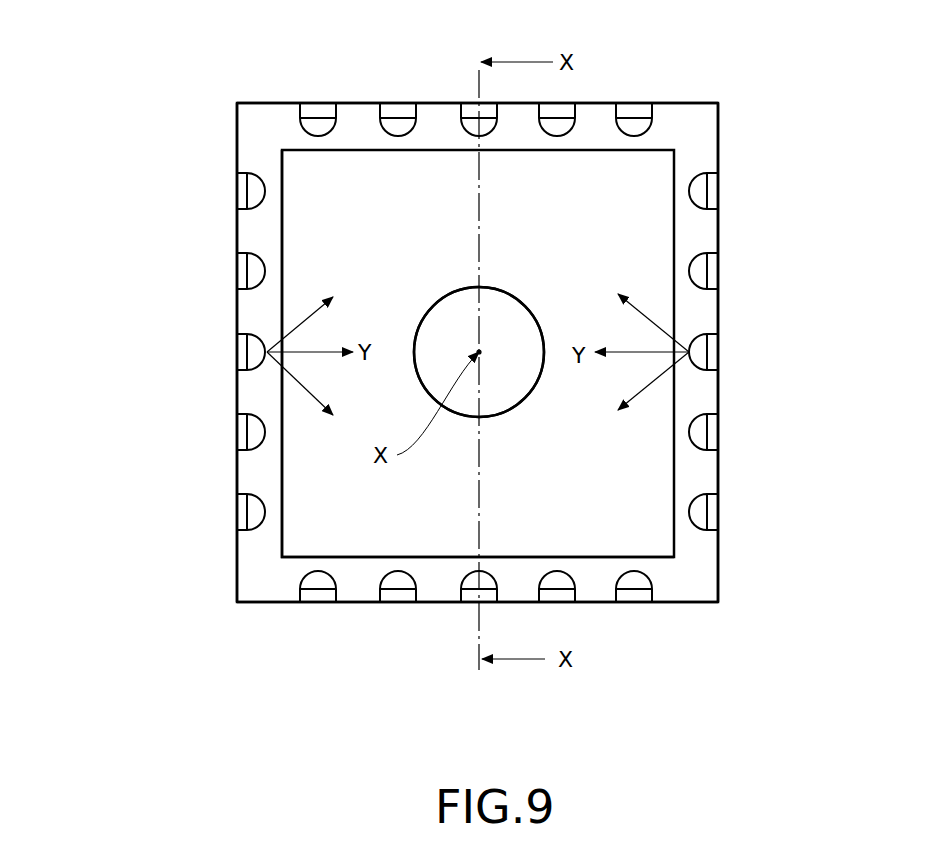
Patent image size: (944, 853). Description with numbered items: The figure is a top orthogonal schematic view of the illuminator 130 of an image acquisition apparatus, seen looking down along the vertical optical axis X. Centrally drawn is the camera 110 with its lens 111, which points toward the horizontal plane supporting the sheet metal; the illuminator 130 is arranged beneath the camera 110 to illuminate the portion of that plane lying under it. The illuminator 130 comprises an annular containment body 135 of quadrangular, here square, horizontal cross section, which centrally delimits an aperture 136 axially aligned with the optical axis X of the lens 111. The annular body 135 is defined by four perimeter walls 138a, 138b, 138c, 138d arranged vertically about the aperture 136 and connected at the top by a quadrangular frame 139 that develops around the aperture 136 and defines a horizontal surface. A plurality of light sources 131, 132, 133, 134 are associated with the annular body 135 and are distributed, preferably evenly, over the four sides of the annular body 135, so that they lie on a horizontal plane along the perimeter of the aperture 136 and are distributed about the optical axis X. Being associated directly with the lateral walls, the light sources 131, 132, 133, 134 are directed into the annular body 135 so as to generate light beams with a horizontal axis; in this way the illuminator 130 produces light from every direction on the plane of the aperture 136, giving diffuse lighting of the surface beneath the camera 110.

The camera 110 is at (517, 287).
The lens 111 is at (510, 378).
The illuminator 130 is at (236, 134).
The light sources 131 is at (236, 275).
The light sources 132 is at (398, 102).
The light sources 133 is at (718, 272).
The light sources 134 is at (391, 605).
The annular containment body 135 is at (697, 103).
The aperture 136 is at (307, 525).
The perimeter wall 138a is at (235, 543).
The perimeter wall 138b is at (258, 103).
The perimeter wall 138c is at (720, 388).
The perimeter wall 138d is at (437, 604).
The quadrangular frame 139 is at (694, 132).